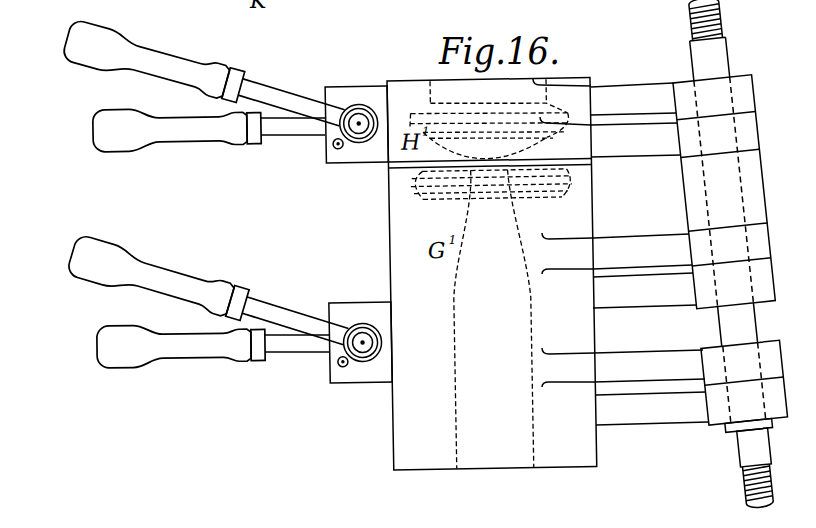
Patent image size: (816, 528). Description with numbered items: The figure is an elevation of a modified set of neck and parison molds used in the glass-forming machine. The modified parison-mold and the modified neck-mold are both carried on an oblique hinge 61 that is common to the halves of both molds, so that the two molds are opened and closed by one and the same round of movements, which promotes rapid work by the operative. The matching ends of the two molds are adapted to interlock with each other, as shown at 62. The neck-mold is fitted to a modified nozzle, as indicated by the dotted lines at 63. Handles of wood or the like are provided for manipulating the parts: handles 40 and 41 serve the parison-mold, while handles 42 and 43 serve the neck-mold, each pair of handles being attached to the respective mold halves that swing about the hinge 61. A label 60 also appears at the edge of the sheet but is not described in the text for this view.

The handle 40 is at (78, 259).
The handle 41 is at (102, 353).
The handle 42 is at (75, 42).
The handle 43 is at (102, 136).
The lever 60 is at (219, 6).
The oblique hinge 61 is at (667, 256).
The interlock 62 is at (410, 189).
The dotted lines 63 is at (442, 93).